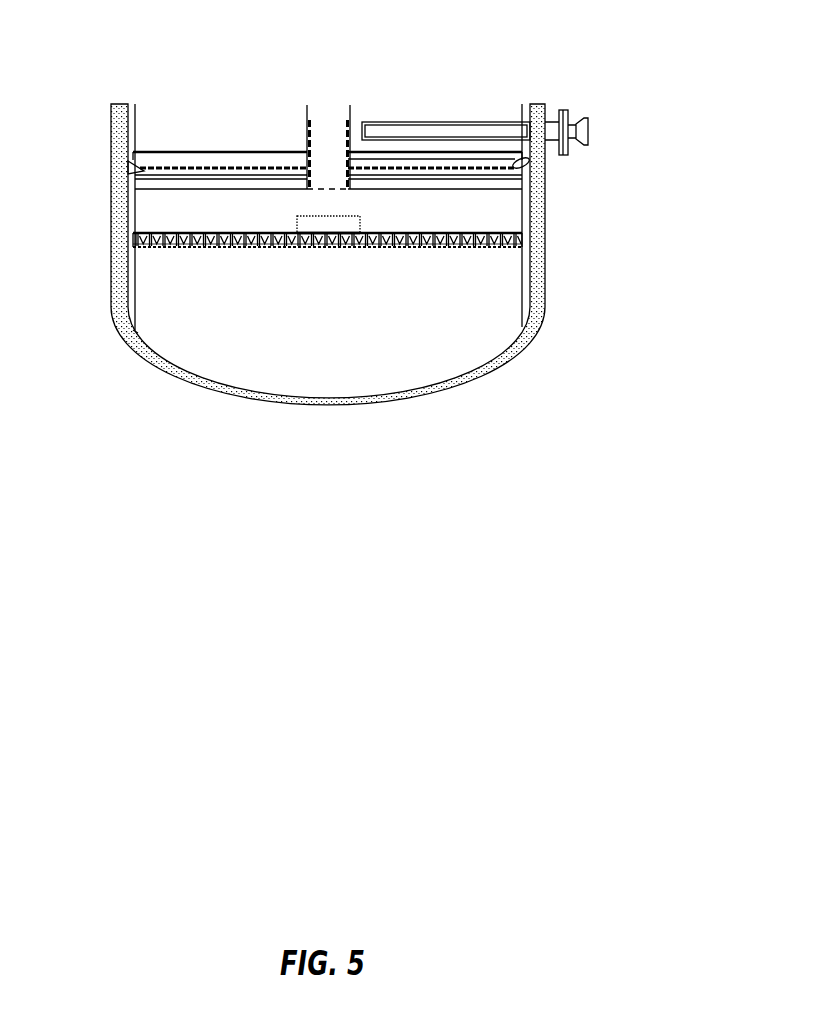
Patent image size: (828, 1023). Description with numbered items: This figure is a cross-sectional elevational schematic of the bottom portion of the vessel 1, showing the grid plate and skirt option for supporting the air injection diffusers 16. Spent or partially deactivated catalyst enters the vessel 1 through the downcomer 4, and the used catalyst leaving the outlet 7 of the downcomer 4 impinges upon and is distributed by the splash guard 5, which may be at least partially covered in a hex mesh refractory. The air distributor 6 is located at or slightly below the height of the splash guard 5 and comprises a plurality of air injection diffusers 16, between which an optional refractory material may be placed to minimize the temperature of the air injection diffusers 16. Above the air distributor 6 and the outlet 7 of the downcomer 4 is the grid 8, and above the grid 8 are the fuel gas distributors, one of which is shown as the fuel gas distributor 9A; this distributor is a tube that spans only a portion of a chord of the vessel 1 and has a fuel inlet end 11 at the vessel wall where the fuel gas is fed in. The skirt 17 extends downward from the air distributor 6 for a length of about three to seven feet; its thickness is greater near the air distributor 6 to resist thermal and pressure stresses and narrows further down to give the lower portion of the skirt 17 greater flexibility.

The vessel 1 is at (545, 110).
The downcomer 4 is at (307, 112).
The splash guard 5 is at (297, 217).
The air distributor 6 is at (477, 247).
The outlet 7 is at (330, 190).
The grid 8 is at (530, 159).
The fuel gas distributor 9A is at (437, 120).
The fuel inlet end 11 is at (570, 110).
The air injection diffusers 16 is at (522, 233).
The skirt 17 is at (136, 290).